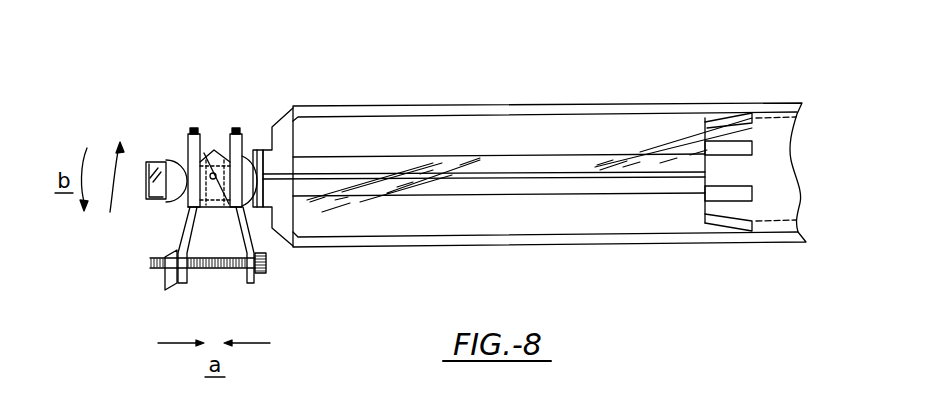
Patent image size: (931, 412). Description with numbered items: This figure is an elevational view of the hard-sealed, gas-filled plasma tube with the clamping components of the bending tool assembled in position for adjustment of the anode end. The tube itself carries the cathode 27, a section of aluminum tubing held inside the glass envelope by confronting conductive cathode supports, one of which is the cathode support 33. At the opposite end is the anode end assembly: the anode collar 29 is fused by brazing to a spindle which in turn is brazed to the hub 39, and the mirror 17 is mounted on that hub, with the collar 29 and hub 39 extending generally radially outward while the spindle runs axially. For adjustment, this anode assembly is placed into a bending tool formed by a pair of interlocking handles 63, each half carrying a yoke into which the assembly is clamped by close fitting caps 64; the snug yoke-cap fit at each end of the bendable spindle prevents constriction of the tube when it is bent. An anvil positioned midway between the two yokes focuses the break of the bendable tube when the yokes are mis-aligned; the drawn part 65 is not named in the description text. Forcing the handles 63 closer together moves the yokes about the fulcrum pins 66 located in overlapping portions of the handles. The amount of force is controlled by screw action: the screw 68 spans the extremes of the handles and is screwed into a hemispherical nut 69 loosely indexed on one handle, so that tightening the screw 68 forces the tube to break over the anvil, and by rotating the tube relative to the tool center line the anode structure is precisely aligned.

The mirror 17 is at (147, 162).
The cathode 27 is at (770, 113).
The anode collar 29 is at (257, 152).
The cathode support 33 is at (705, 118).
The hub 39 is at (168, 161).
The interlocking handles 63 is at (256, 282).
The caps 64 is at (247, 122).
The posts 65 is at (207, 161).
The fulcrum pins 66 is at (209, 227).
The screw 68 is at (266, 262).
The hemispherical nut 69 is at (165, 276).